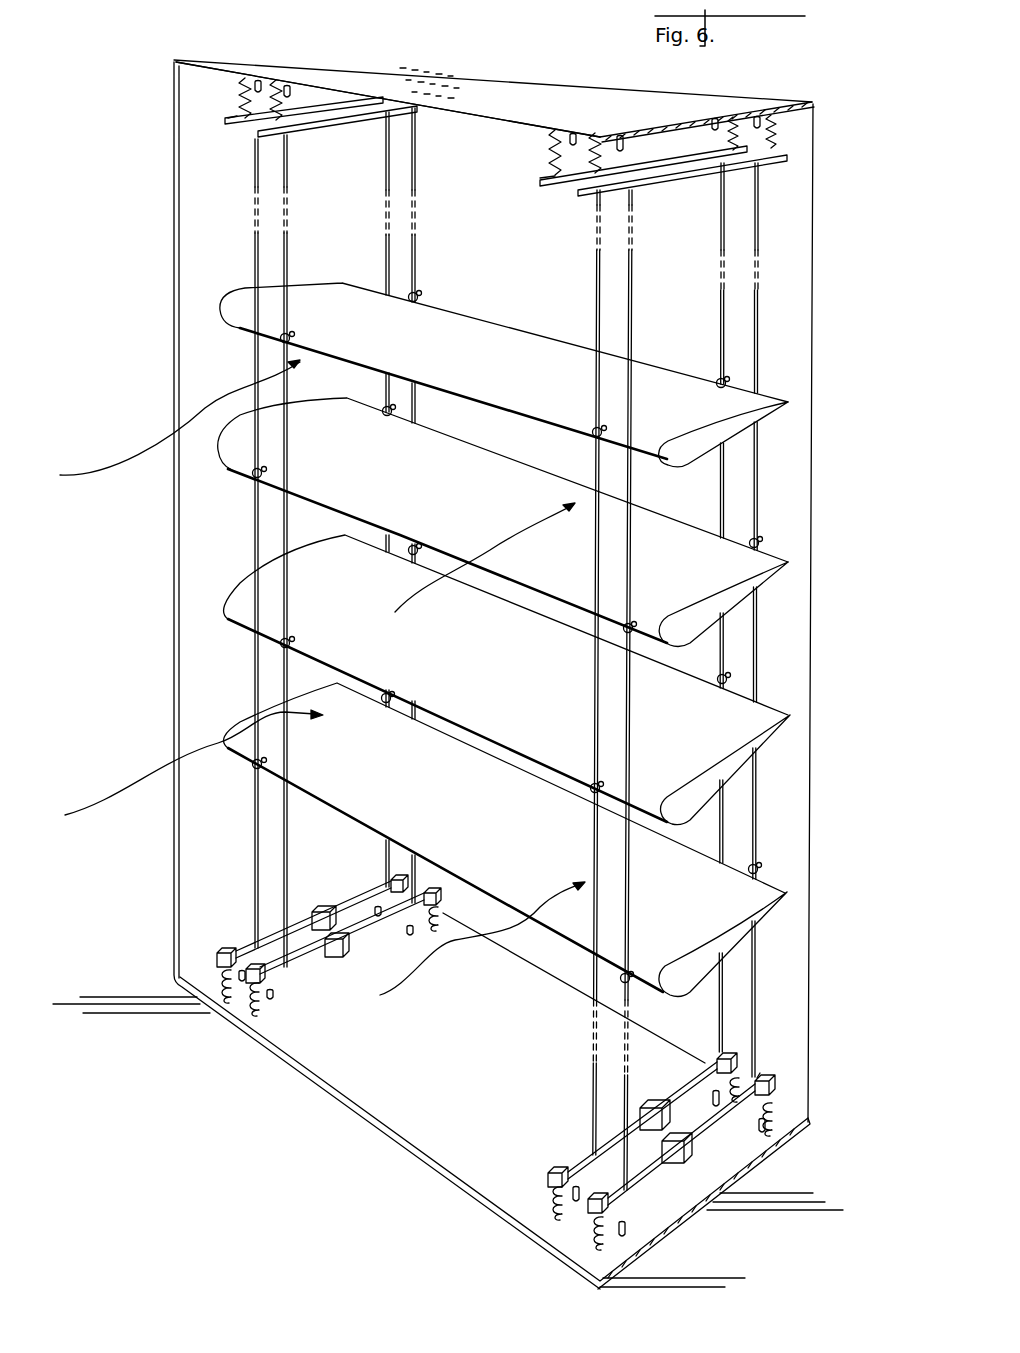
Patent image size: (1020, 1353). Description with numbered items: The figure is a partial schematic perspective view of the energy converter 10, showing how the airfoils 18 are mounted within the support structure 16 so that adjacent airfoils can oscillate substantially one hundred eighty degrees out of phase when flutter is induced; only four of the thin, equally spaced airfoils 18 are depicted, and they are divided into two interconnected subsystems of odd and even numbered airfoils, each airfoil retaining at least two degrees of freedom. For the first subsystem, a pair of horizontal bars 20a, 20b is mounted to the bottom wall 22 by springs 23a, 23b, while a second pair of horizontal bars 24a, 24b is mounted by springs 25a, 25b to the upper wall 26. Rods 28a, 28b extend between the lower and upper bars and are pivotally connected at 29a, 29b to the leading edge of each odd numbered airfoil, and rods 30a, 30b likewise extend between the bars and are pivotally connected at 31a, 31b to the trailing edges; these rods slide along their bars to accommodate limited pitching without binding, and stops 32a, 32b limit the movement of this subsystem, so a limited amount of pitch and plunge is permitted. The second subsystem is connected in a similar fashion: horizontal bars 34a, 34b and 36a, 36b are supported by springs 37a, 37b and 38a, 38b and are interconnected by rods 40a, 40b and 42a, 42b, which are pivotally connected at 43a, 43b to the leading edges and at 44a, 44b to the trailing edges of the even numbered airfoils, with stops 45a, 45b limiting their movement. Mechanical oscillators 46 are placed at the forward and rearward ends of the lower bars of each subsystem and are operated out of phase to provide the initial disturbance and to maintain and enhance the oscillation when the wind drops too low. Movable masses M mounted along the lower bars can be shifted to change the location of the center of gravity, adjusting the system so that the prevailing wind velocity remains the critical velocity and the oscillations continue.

The energy converter 10 is at (848, 543).
The support structure 16 is at (174, 245).
The airfoils 18 is at (697, 452).
The horizontal bar 20a is at (577, 1160).
The horizontal bar 20b is at (303, 963).
The bottom wall 22 is at (348, 1117).
The spring 23a is at (758, 1073).
The spring 23b is at (447, 914).
The horizontal bar 24a is at (542, 180).
The horizontal bar 24b is at (306, 133).
The spring 25a is at (540, 148).
The spring 25b is at (248, 133).
The upper wall 26 is at (463, 120).
The rod 28a is at (587, 1073).
The rod 28b is at (288, 826).
The pivotal connection 29a is at (592, 784).
The pivotal connection 29b is at (293, 337).
The rod 30a is at (720, 233).
The rod 30b is at (417, 228).
The pivotal connection 31a is at (718, 380).
The pivotal connection 31b is at (419, 296).
The stop 32a is at (713, 1092).
The stop 32b is at (362, 953).
The horizontal bar 34a is at (647, 1180).
The horizontal bar 34b is at (242, 950).
The horizontal bar 36a is at (657, 183).
The horizontal bar 36b is at (228, 122).
The spring 37a is at (782, 1102).
The spring 37b is at (216, 1010).
The spring 38a is at (590, 130).
The spring 38b is at (240, 97).
The rod 40a is at (622, 1030).
The rod 40b is at (253, 878).
The rod 42a is at (758, 222).
The rod 42b is at (387, 175).
The pivotal connection 43a is at (632, 972).
The pivotal connection 43b is at (255, 768).
The pivotal connection 44a is at (757, 866).
The pivotal connection 44b is at (385, 703).
The stop 45a is at (643, 135).
The stop 45b is at (260, 80).
The mechanical oscillator 46 is at (222, 950).
The movable mass M is at (652, 1102).